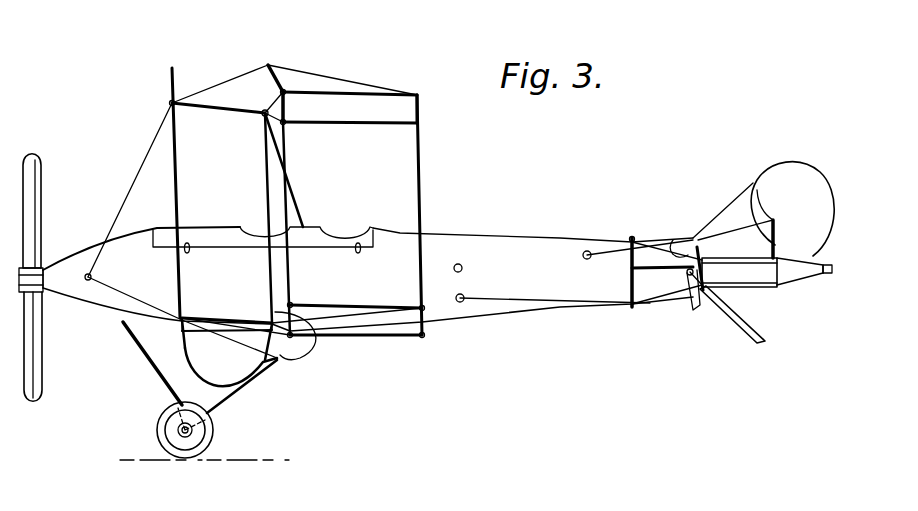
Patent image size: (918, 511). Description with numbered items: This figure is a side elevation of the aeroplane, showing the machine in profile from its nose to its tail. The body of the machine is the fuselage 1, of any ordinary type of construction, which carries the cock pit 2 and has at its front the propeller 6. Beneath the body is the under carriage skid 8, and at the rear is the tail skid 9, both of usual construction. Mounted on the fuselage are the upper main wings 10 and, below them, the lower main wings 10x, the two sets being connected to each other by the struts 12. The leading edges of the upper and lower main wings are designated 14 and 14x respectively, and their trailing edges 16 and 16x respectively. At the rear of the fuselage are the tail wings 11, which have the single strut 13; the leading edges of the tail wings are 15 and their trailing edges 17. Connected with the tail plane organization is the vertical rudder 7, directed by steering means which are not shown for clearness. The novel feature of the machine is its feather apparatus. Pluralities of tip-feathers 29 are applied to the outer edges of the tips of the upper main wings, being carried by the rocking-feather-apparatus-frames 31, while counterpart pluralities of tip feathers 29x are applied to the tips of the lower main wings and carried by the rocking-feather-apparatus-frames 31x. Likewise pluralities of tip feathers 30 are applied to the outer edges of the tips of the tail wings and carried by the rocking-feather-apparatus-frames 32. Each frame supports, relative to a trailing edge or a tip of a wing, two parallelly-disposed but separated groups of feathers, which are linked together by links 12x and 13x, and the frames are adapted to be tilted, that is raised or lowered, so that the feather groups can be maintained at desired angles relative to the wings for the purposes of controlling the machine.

The fuselage 1 is at (368, 279).
The cock pit 2 is at (340, 236).
The propeller 6 is at (33, 197).
The vertical rudder 7 is at (806, 219).
The under carriage skid 8 is at (153, 372).
The tail skid 9 is at (735, 326).
The upper main wings 10 is at (207, 107).
The lower main wings 10x is at (233, 303).
The tail wings 11 is at (640, 243).
The struts 12 is at (177, 210).
The links 12x is at (423, 213).
The single strut 13 is at (682, 247).
The links 13x is at (777, 286).
The leading edges of the upper main wings 14 is at (172, 105).
The leading edges of the lower main wings 14x is at (150, 333).
The leading edges of the tail wings 15 is at (627, 273).
The trailing edges of the upper main wings 16 is at (264, 110).
The trailing edges of the lower main wings 16x is at (273, 356).
The trailing edges of the tail wings 17 is at (697, 275).
The tip-feathers 29 is at (342, 93).
The tip feathers 29x is at (393, 351).
The tip feathers 30 is at (727, 259).
The rocking-feather-apparatus-frames 31 is at (277, 106).
The rocking-feather-apparatus-frames 31x is at (306, 345).
The rocking-feather-apparatus-frames 32 is at (698, 279).